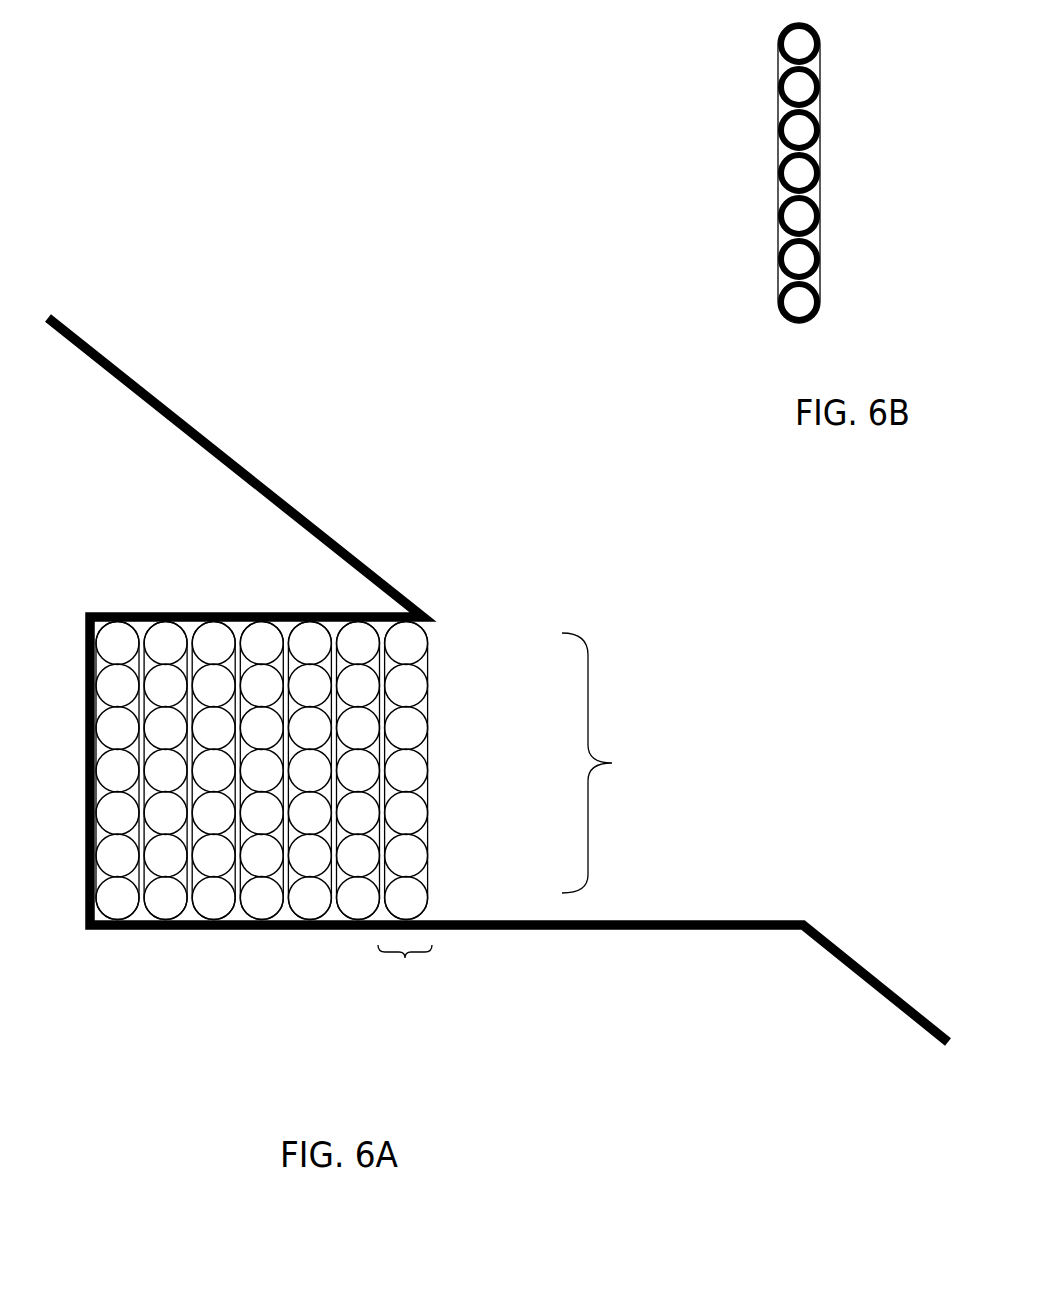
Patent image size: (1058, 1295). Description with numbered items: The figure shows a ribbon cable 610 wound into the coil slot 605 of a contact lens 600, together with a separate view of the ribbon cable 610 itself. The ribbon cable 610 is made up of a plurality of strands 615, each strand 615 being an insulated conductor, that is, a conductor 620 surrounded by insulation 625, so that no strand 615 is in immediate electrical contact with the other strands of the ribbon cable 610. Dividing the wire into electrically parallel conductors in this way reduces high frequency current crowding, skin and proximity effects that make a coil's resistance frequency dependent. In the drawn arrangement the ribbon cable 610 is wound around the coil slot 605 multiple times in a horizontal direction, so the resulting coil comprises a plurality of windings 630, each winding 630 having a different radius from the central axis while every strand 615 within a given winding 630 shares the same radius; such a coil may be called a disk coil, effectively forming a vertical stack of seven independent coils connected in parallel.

In FIG. 6A, the contact lens 600 is at (180, 350).
In FIG. 6A, the coil slot 605 is at (638, 763).
In FIG. 6A, the ribbon cable 610 is at (402, 680).
In FIG. 6B, the ribbon cable 610 is at (639, 205).
In FIG. 6B, the strand 615 is at (637, 335).
In FIG. 6B, the conductor 620 is at (803, 303).
In FIG. 6B, the insulation 625 is at (779, 299).
In FIG. 6A, the winding 630 is at (410, 987).